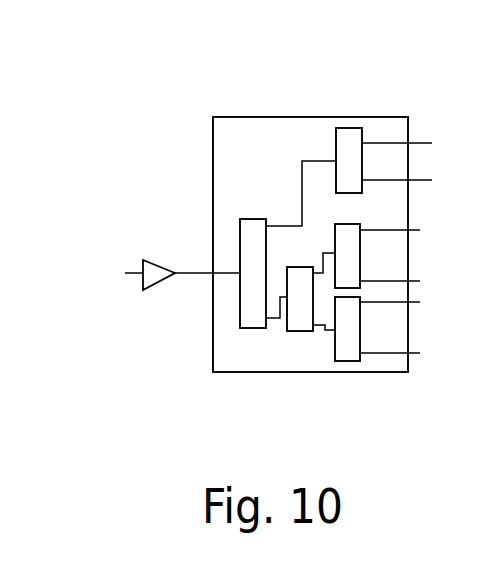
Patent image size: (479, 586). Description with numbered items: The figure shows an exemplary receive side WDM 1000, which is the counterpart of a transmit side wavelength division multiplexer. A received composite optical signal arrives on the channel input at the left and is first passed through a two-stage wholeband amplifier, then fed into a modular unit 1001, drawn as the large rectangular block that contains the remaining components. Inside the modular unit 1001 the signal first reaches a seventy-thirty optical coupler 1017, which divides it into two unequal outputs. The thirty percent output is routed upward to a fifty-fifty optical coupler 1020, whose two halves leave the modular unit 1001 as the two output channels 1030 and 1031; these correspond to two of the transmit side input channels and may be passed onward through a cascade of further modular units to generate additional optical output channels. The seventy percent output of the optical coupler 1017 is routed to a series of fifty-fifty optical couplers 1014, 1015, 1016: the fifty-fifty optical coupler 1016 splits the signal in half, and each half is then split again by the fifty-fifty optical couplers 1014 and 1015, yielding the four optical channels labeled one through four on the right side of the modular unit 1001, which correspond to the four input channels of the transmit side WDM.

The receive side WDM 1000 is at (176, 86).
The modular unit 1001 is at (408, 117).
The 50/50 optical coupler 1014 is at (155, 262).
The 50/50 optical coupler 1015 is at (335, 343).
The 50/50 optical coupler 1016 is at (300, 267).
The 70/30 optical coupler 1017 is at (254, 219).
The 50/50 optical coupler 1020 is at (355, 128).
The output channel 1030 is at (432, 143).
The output channel 1031 is at (432, 180).